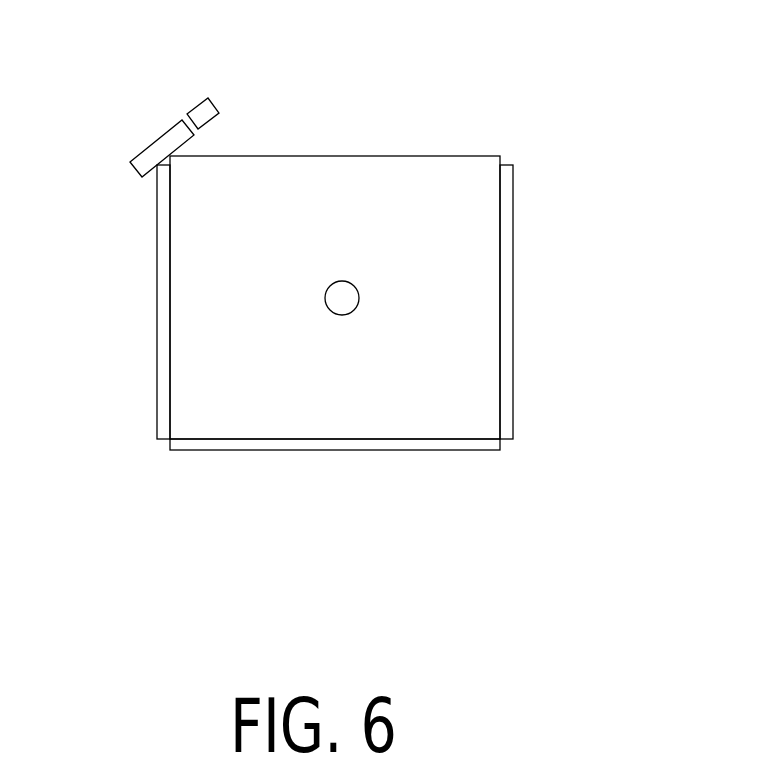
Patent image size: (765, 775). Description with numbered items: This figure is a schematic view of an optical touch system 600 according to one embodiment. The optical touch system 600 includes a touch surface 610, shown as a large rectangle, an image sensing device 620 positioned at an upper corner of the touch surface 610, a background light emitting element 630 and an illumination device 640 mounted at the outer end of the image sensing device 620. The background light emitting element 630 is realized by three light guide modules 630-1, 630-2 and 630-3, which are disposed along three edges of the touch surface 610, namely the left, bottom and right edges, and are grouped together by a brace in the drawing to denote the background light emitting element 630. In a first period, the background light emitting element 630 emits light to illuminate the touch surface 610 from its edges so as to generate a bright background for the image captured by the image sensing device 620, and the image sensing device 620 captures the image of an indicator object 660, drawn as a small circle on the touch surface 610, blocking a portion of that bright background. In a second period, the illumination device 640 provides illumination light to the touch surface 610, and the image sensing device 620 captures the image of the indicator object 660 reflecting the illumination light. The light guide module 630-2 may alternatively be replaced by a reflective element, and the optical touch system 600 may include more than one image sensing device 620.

The optical touch system 600 is at (386, 323).
The touch surface 610 is at (482, 238).
The image sensing device 620 is at (142, 165).
The illumination device 640 is at (208, 103).
The indicator object 660 is at (345, 286).
The background light emitting element 630 is at (342, 390).
The light guide module 630-1 is at (163, 394).
The light guide module 630-2 is at (342, 445).
The light guide module 630-3 is at (505, 373).